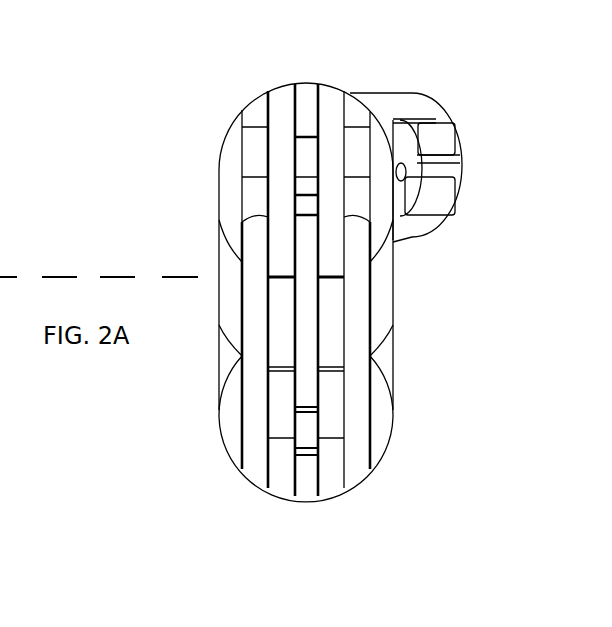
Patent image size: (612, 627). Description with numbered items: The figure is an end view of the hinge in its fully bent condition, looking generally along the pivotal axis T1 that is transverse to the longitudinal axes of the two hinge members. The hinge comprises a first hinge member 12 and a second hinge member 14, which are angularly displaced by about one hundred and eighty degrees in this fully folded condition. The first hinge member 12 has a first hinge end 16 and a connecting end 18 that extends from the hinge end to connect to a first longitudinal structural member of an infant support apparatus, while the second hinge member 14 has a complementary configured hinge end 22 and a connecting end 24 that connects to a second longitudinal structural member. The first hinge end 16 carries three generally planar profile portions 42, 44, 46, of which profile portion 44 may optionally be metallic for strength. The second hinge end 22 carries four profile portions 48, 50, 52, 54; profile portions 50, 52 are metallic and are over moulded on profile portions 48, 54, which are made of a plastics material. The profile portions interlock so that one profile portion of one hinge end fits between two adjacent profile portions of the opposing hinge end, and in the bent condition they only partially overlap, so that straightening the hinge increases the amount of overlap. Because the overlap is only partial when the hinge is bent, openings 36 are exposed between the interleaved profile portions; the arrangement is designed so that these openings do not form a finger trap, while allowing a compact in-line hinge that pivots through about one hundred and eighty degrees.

The first hinge member 12 is at (441, 507).
The second hinge member 14 is at (191, 88).
The first hinge end 16 is at (255, 388).
The connecting end 18 is at (383, 430).
The hinge end 22 is at (220, 157).
The connecting end 24 is at (252, 110).
The openings 36 is at (305, 298).
The profile portion 42 is at (355, 468).
The profile portion 44 is at (308, 485).
The profile portion 46 is at (260, 466).
The profile portion 48 is at (412, 238).
The profile portion 50 is at (329, 98).
The profile portion 52 is at (281, 98).
The profile portion 54 is at (222, 208).
The pivotal axis T1 is at (60, 276).